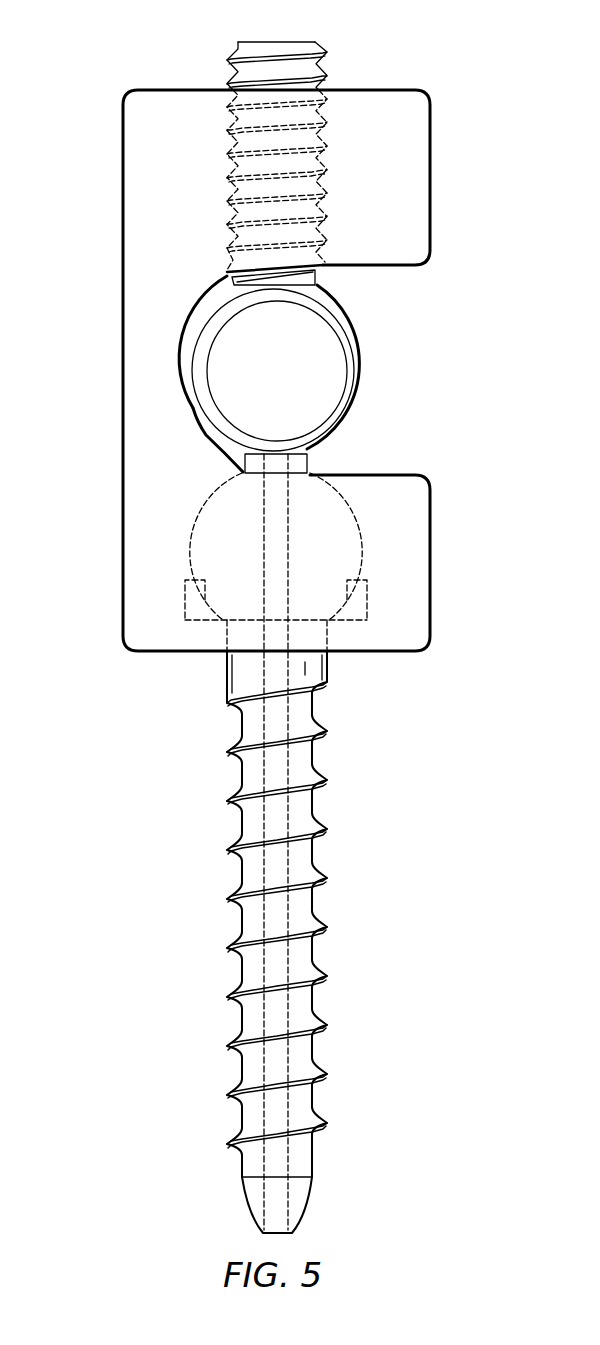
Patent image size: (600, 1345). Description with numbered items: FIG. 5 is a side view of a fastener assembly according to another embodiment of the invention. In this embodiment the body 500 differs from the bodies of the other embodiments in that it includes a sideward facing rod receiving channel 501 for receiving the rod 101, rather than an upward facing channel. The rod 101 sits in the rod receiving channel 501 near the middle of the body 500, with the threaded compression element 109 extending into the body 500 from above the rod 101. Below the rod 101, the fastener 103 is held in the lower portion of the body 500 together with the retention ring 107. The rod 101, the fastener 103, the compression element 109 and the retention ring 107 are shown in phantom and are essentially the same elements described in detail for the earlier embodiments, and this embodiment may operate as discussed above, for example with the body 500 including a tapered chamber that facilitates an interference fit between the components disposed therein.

The body 500 is at (123, 232).
The compression element 109 is at (232, 58).
The rod 101 is at (363, 372).
The rod receiving channel 501 is at (176, 378).
The fastener 103 is at (357, 513).
The retention ring 107 is at (368, 602).